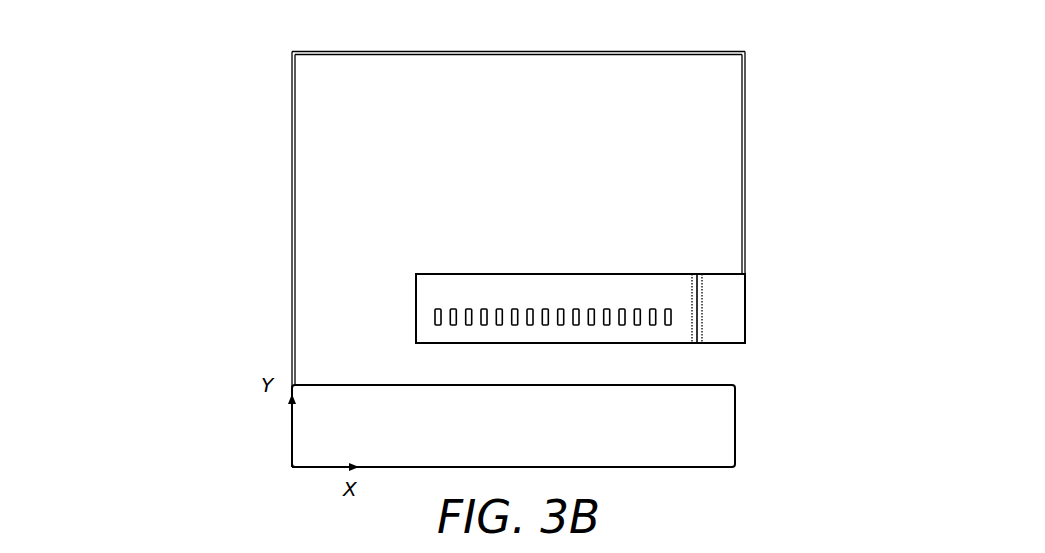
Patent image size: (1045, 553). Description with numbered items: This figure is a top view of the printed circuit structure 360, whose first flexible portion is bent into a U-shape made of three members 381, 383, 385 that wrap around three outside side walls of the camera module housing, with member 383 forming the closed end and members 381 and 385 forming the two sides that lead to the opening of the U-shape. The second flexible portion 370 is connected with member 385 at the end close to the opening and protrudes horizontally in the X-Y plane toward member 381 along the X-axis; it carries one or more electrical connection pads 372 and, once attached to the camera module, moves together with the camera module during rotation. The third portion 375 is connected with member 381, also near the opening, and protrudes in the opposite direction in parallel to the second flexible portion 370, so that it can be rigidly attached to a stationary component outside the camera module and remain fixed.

The printed circuit structure 360 is at (243, 105).
The second flexible portion 370 is at (518, 274).
The electrical connection pads 372 is at (652, 309).
The third portion 375 is at (515, 446).
The member of the first flexible portion 381 is at (292, 252).
The member of the first flexible portion 383 is at (537, 55).
The member of the first flexible portion 385 is at (745, 203).